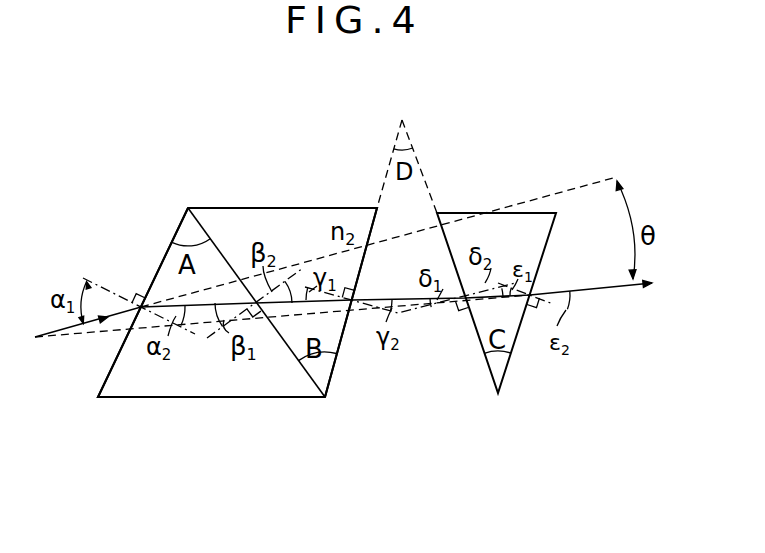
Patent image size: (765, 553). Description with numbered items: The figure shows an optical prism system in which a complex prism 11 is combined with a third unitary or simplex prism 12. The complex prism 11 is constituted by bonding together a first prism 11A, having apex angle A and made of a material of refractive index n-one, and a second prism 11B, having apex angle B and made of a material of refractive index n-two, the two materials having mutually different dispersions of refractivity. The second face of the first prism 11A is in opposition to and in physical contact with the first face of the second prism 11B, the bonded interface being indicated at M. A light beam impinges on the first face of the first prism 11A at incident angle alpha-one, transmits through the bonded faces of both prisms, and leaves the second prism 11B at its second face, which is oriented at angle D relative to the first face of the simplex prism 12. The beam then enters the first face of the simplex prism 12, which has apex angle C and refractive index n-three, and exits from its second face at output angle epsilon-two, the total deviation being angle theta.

The complex prism 11 is at (328, 197).
The first prism 11A is at (153, 387).
The second prism 11B is at (338, 327).
The third unitary or simplex prism 12 is at (487, 212).
The interface surface between prism elements M is at (281, 365).